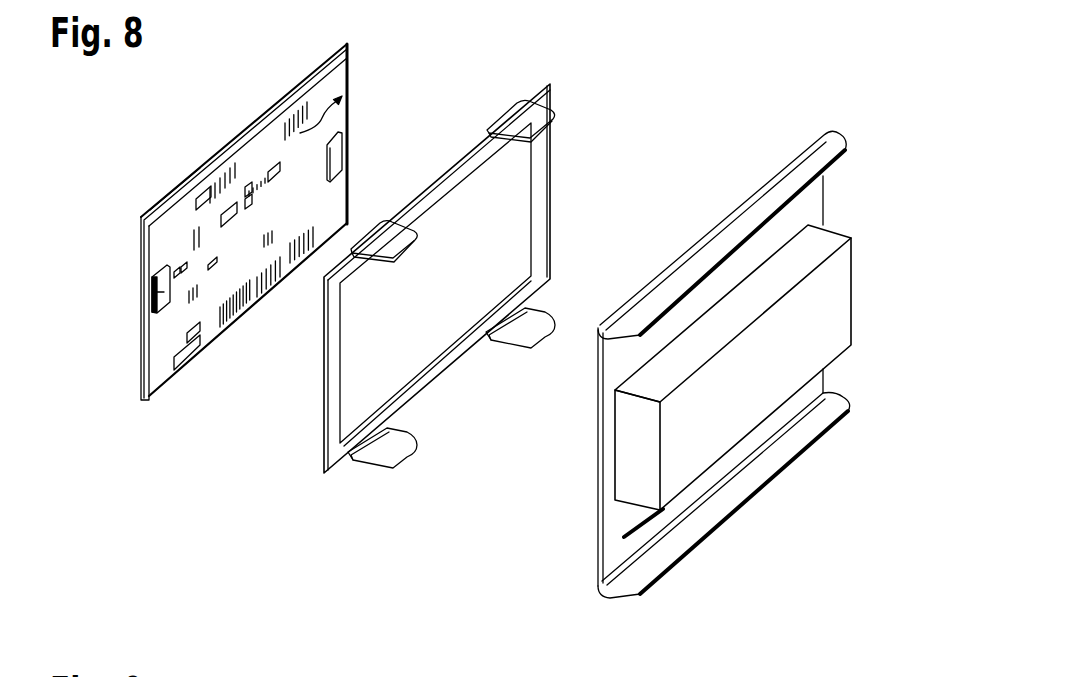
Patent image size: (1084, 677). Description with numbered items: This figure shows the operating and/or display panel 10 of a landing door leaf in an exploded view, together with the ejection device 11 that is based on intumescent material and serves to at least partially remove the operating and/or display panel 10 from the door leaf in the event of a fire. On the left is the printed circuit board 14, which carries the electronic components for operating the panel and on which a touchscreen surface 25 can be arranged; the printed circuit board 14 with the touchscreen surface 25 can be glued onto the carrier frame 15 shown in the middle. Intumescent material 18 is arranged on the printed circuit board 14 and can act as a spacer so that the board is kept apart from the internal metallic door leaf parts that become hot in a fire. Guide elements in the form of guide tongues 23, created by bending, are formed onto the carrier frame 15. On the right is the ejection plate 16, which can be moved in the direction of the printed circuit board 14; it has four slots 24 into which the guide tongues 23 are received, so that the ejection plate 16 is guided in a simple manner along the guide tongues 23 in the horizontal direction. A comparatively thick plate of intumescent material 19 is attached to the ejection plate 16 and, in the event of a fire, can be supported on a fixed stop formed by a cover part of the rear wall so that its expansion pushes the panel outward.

The operating and/or display panel 10 is at (820, 85).
The ejection device 11 is at (863, 266).
The printed circuit board 14 is at (162, 247).
The carrier frame 15 is at (335, 381).
The ejection plate 16 is at (760, 203).
The intumescent material 18 is at (157, 297).
The intumescent material 19 is at (840, 321).
The guide tongues 23 is at (390, 452).
The slots 24 is at (644, 524).
The touchscreen surface 25 is at (161, 203).